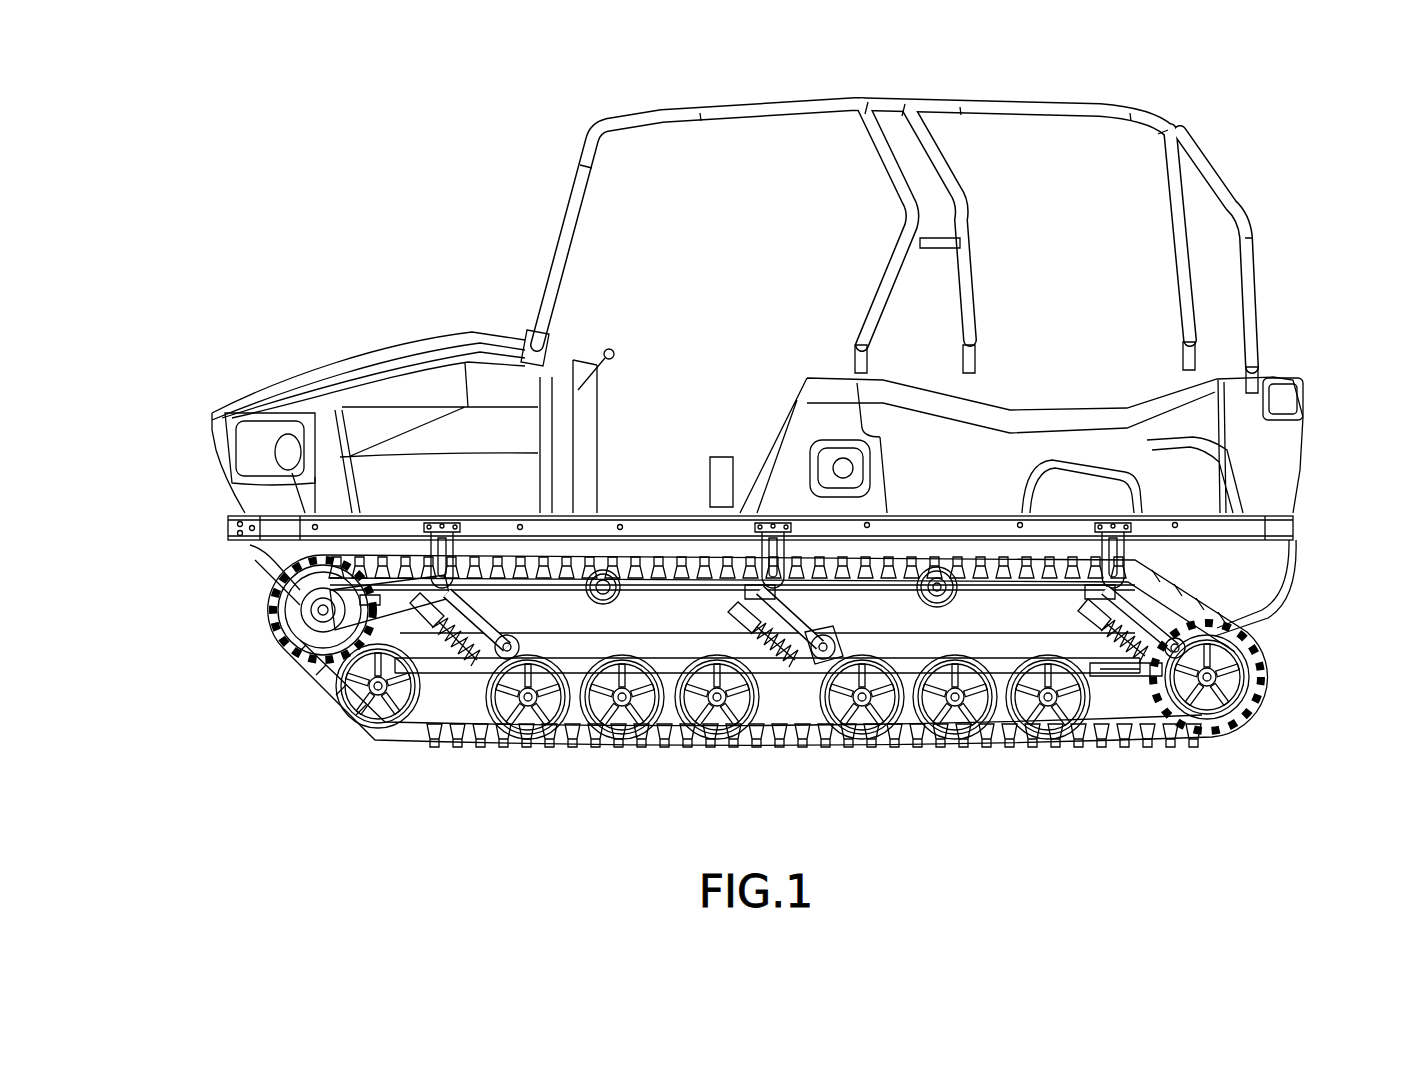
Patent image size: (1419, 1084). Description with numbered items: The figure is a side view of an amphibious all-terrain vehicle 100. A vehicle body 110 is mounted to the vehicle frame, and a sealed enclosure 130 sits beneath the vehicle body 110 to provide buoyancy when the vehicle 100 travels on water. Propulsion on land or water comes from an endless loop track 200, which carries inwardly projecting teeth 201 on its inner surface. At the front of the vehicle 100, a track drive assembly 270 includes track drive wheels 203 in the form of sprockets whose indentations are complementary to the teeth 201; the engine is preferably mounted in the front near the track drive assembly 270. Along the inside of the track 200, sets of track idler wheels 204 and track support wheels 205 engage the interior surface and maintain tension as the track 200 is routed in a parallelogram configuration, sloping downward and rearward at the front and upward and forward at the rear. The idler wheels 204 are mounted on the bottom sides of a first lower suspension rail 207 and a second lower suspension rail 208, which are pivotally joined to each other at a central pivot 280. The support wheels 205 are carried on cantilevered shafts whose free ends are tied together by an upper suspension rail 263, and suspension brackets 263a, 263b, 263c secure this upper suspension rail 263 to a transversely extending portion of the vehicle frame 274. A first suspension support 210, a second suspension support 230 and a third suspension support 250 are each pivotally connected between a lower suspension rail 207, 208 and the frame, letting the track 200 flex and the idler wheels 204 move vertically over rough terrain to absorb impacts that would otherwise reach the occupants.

The all-terrain vehicle 100 is at (172, 188).
The vehicle body 110 is at (305, 378).
The sealed enclosure 130 is at (1278, 580).
The endless loop track 200 is at (1224, 748).
The inwardly projecting teeth 201 is at (1162, 742).
The track drive wheels 203 is at (283, 613).
The track idler wheels 204 is at (322, 710).
The track support wheels 205 is at (610, 570).
The first lower suspension rail 207 is at (442, 678).
The second lower suspension rail 208 is at (1108, 676).
The first suspension support 210 is at (508, 620).
The second suspension support 230 is at (820, 617).
The third suspension support 250 is at (1068, 618).
The upper suspension rail 263 is at (660, 585).
The suspension bracket 263a is at (455, 548).
The suspension bracket 263b is at (770, 530).
The suspension bracket 263c is at (1100, 550).
The track drive assembly 270 is at (228, 590).
The transversely extending portion of the vehicle frame 274 is at (1262, 527).
The central pivot 280 is at (808, 660).